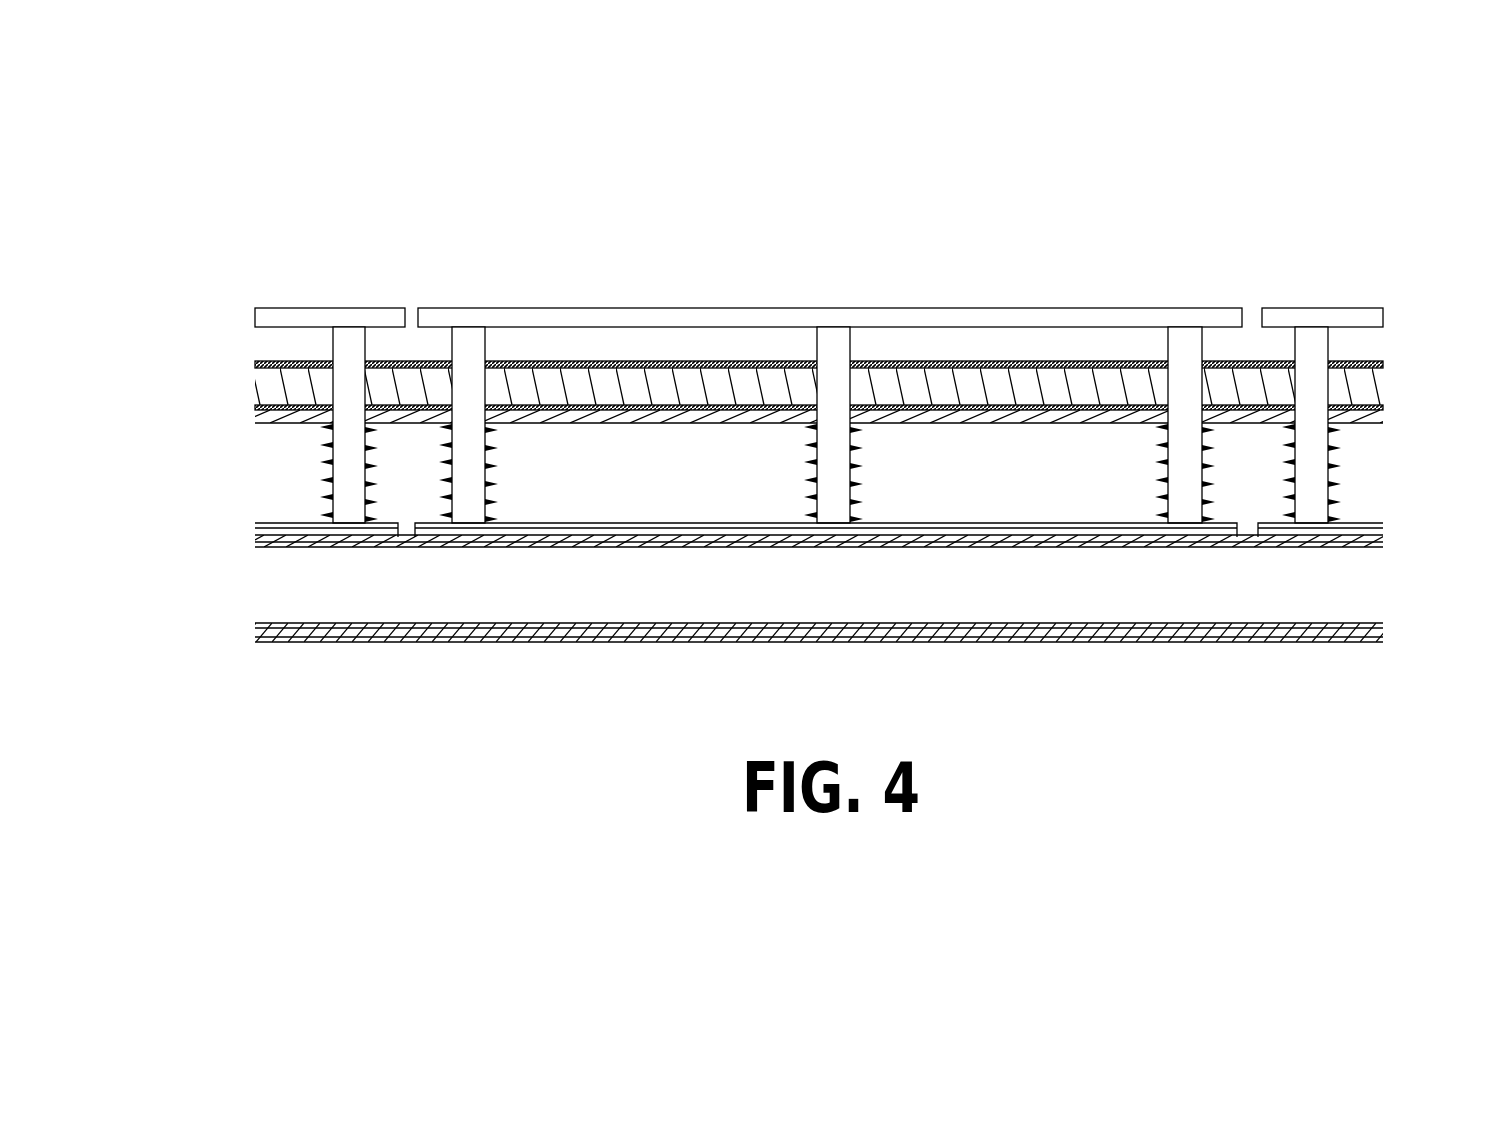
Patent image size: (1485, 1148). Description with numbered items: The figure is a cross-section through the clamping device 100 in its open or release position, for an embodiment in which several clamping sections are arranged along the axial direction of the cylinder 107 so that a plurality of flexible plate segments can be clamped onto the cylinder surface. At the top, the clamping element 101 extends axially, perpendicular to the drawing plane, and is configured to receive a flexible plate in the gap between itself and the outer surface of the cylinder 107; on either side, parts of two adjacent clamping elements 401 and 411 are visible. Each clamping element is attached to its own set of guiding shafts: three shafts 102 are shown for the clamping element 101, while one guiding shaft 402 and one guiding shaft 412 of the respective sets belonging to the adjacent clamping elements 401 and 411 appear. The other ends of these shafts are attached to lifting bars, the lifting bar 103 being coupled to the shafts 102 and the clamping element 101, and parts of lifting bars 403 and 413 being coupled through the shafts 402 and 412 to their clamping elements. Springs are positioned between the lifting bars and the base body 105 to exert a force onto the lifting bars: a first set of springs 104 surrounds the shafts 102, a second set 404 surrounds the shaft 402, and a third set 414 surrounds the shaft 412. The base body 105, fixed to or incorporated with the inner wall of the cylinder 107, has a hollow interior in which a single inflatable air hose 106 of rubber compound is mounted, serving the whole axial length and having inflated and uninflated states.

The clamping device 100 is at (783, 502).
The clamping element 101 is at (1000, 315).
The guiding shaft 102 is at (458, 328).
The lifting bar 103 is at (513, 530).
The spring 104 is at (500, 465).
The base body 105 is at (938, 412).
The inflatable air hose 106 is at (1172, 547).
The cylinder 107 is at (678, 385).
The adjacent clamping element 401 is at (272, 315).
The guiding shaft 402 is at (347, 345).
The lifting bar 403 is at (287, 530).
The second set of springs 404 is at (380, 487).
The adjacent clamping element 411 is at (1358, 315).
The guiding shaft 412 is at (1308, 340).
The lifting bar 413 is at (1320, 532).
The third set of springs 414 is at (1340, 483).